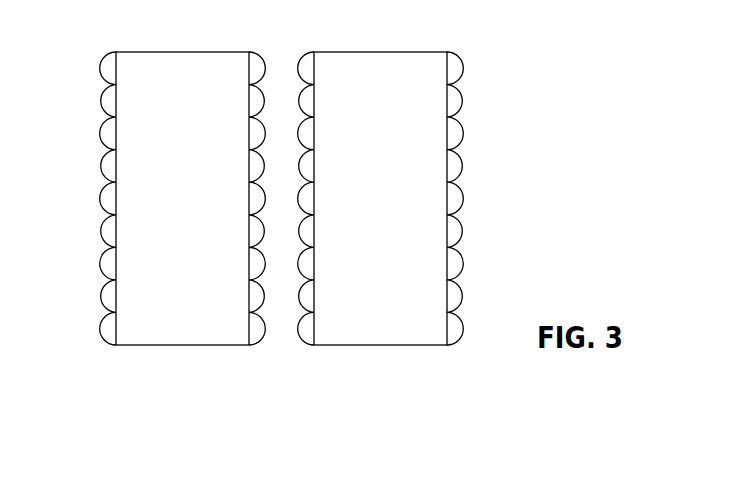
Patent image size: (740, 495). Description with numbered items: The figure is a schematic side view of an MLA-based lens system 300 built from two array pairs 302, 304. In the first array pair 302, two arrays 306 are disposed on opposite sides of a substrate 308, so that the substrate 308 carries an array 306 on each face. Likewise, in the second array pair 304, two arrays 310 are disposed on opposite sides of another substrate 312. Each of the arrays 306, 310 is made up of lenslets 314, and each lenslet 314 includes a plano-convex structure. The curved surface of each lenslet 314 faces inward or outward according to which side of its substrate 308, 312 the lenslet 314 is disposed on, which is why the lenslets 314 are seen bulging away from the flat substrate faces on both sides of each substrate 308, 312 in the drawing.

The lens system 300 is at (492, 53).
The array pair 302 is at (183, 206).
The array pair 304 is at (380, 206).
The arrays 306 is at (108, 43).
The substrate 308 is at (167, 207).
The arrays 310 is at (305, 43).
The substrate 312 is at (365, 207).
The lenslets 314 is at (98, 106).